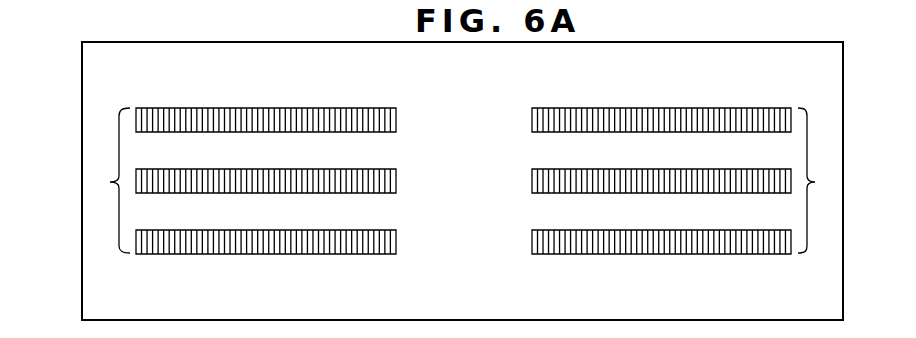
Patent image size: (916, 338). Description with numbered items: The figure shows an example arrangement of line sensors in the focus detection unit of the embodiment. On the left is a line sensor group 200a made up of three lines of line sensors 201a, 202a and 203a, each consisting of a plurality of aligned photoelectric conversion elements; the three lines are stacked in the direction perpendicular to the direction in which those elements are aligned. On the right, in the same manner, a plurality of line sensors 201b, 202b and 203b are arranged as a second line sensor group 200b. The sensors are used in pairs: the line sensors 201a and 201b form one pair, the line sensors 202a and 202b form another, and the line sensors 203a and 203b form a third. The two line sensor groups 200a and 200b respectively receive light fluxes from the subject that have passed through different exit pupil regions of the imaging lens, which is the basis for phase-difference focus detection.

The line sensor group 200a is at (109, 182).
The line sensor group 200b is at (816, 182).
The line sensor 201a is at (392, 97).
The line sensor 202a is at (392, 158).
The line sensor 203a is at (392, 220).
The line sensor 201b is at (762, 97).
The line sensor 202b is at (762, 158).
The line sensor 203b is at (762, 220).